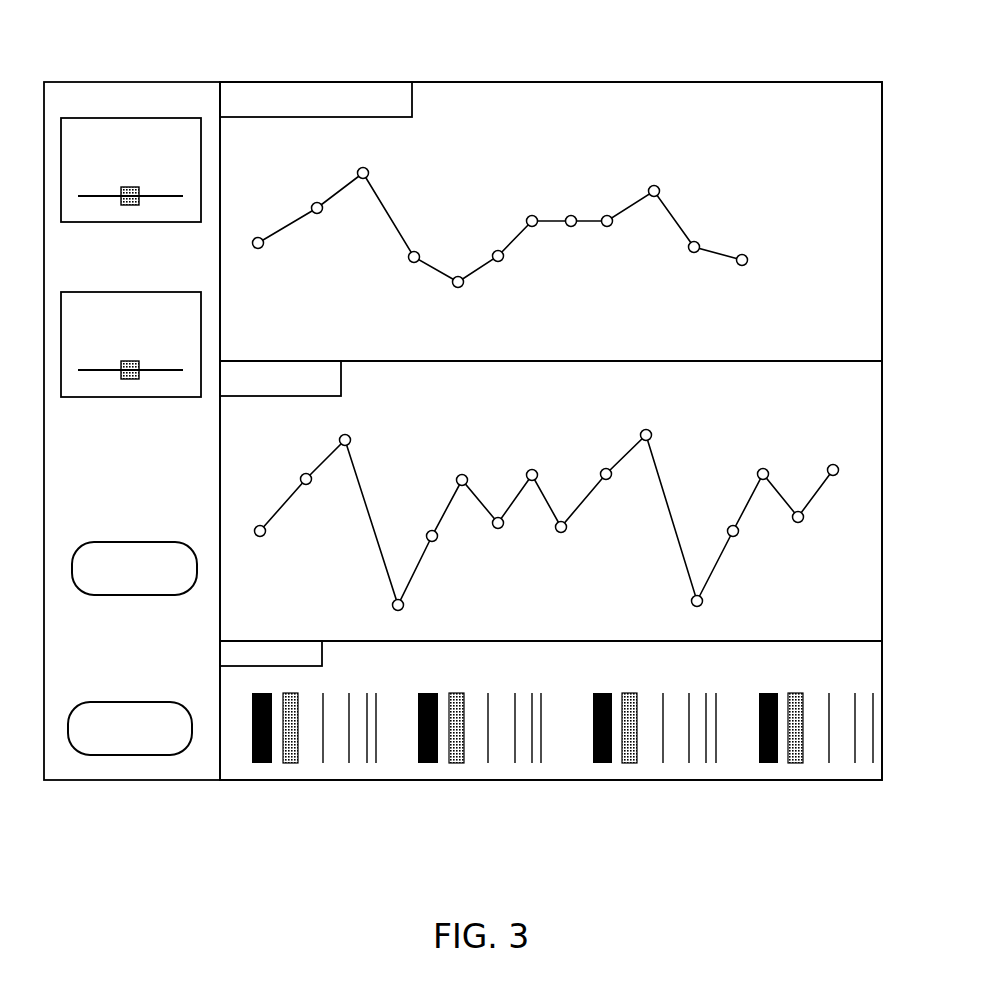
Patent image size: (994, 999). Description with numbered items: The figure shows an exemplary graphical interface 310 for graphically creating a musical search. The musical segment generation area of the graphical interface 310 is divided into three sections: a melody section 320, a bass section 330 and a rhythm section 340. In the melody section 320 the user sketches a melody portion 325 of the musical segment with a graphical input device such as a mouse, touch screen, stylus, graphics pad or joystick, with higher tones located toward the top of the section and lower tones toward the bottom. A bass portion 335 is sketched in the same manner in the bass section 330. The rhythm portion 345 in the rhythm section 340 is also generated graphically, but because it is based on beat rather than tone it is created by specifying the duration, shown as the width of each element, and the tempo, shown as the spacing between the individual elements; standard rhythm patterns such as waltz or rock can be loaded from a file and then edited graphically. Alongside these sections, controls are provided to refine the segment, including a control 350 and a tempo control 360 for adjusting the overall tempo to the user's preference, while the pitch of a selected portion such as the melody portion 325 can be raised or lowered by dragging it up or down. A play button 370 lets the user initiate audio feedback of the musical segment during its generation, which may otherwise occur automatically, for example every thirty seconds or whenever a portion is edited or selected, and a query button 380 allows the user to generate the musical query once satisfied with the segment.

The graphical interface 310 is at (812, 55).
The melody section 320 is at (509, 134).
The melody portion 325 is at (673, 205).
The bass section 330 is at (498, 407).
The bass portion 335 is at (663, 440).
The rhythm section 340 is at (413, 668).
The rhythm portion 345 is at (730, 702).
The tempo slider control 350 is at (112, 146).
The tempo control 360 is at (112, 320).
The play button 370 is at (118, 603).
The query button 380 is at (113, 765).